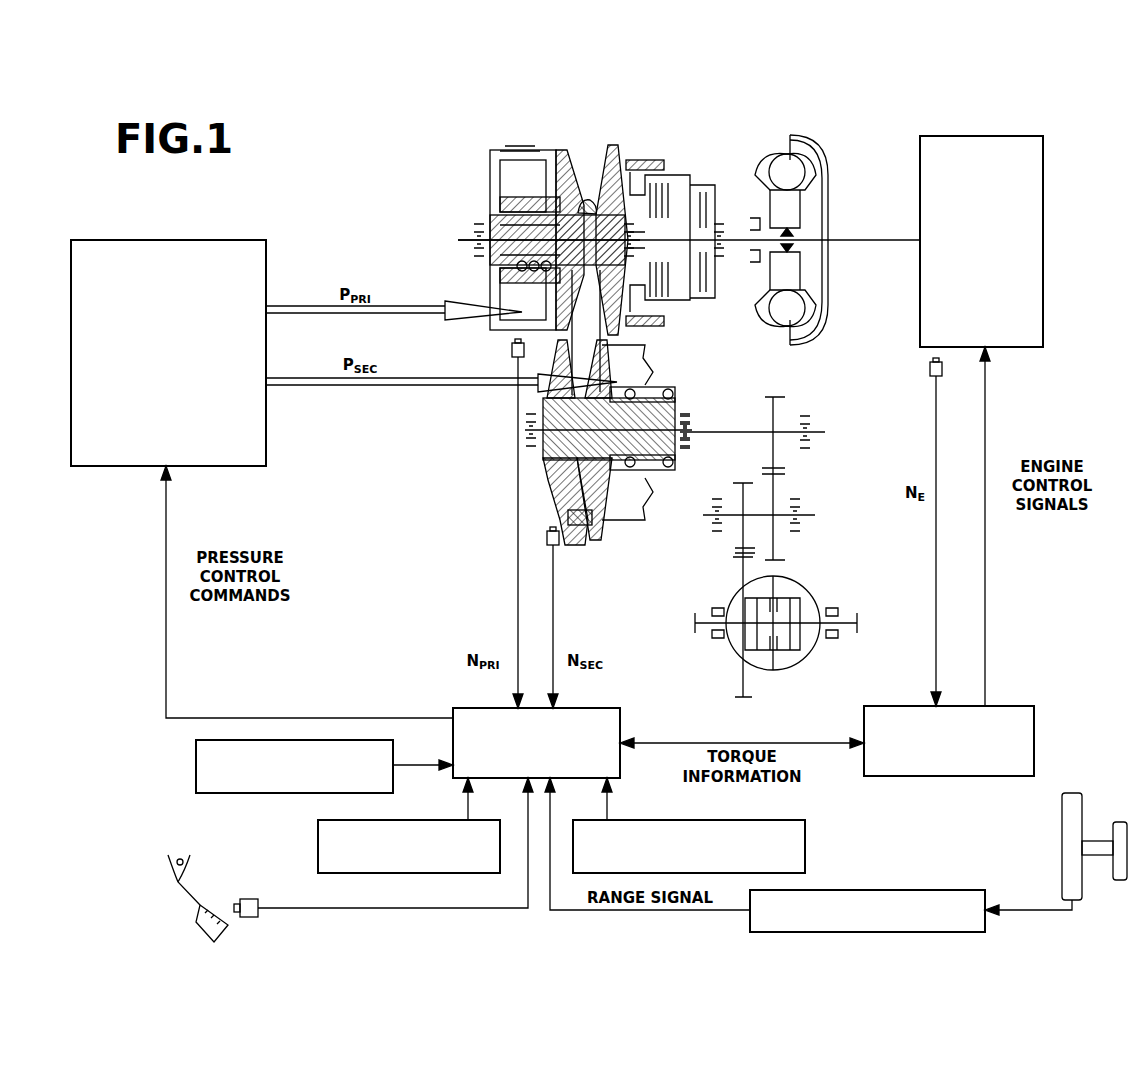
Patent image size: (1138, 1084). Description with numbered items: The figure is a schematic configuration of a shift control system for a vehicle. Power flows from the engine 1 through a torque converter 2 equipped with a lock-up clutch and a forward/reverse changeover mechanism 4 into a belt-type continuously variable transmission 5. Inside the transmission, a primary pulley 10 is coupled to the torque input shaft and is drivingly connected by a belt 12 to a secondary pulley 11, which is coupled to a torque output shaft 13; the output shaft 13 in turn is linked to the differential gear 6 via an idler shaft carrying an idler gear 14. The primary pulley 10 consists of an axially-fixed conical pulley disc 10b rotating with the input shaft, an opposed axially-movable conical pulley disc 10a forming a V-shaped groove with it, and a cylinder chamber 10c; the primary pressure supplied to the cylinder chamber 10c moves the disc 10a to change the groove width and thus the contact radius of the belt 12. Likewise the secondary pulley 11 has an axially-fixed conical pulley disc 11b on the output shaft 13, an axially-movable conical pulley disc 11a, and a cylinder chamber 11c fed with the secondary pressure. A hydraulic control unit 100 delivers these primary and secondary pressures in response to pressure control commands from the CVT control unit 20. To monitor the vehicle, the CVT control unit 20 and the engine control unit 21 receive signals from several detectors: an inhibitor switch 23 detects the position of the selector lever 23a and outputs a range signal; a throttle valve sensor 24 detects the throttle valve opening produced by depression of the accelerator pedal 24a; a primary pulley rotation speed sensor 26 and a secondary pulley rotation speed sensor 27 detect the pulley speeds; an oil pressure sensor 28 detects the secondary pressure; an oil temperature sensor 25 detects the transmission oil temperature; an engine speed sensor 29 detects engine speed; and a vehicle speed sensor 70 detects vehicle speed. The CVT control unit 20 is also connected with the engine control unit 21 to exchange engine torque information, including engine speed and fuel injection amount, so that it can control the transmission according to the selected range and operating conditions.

The engine 1 is at (1003, 135).
The torque converter 2 is at (797, 128).
The forward/reverse changeover mechanism 4 is at (648, 135).
The belt-type continuously variable transmission 5 is at (568, 202).
The differential gear 6 is at (822, 580).
The primary pulley 10 is at (568, 202).
The axially-movable conical pulley disc 10a is at (560, 150).
The axially-fixed conical pulley disc 10b is at (615, 143).
The cylinder chamber 10c is at (505, 178).
The secondary pulley 11 is at (568, 471).
The axially-movable conical pulley disc 11a is at (598, 525).
The axially-fixed conical pulley disc 11b is at (560, 496).
The cylinder chamber 11c is at (615, 500).
The belt 12 is at (588, 197).
The torque output shaft 13 is at (713, 432).
The idler gear 14 is at (776, 448).
The CVT control unit 20 is at (455, 708).
The engine control unit 21 is at (1010, 706).
The inhibitor switch 23 is at (915, 890).
The selector lever 23a is at (1076, 792).
The throttle valve sensor 24 is at (246, 898).
The accelerator pedal 24a is at (183, 898).
The oil temperature sensor 25 is at (805, 845).
The primary pulley rotation speed sensor 26 is at (510, 350).
The secondary pulley rotation speed sensor 27 is at (562, 540).
The oil pressure sensor 28 is at (335, 820).
The engine speed sensor 29 is at (928, 370).
The vehicle speed sensor 70 is at (196, 766).
The hydraulic control unit 100 is at (200, 239).